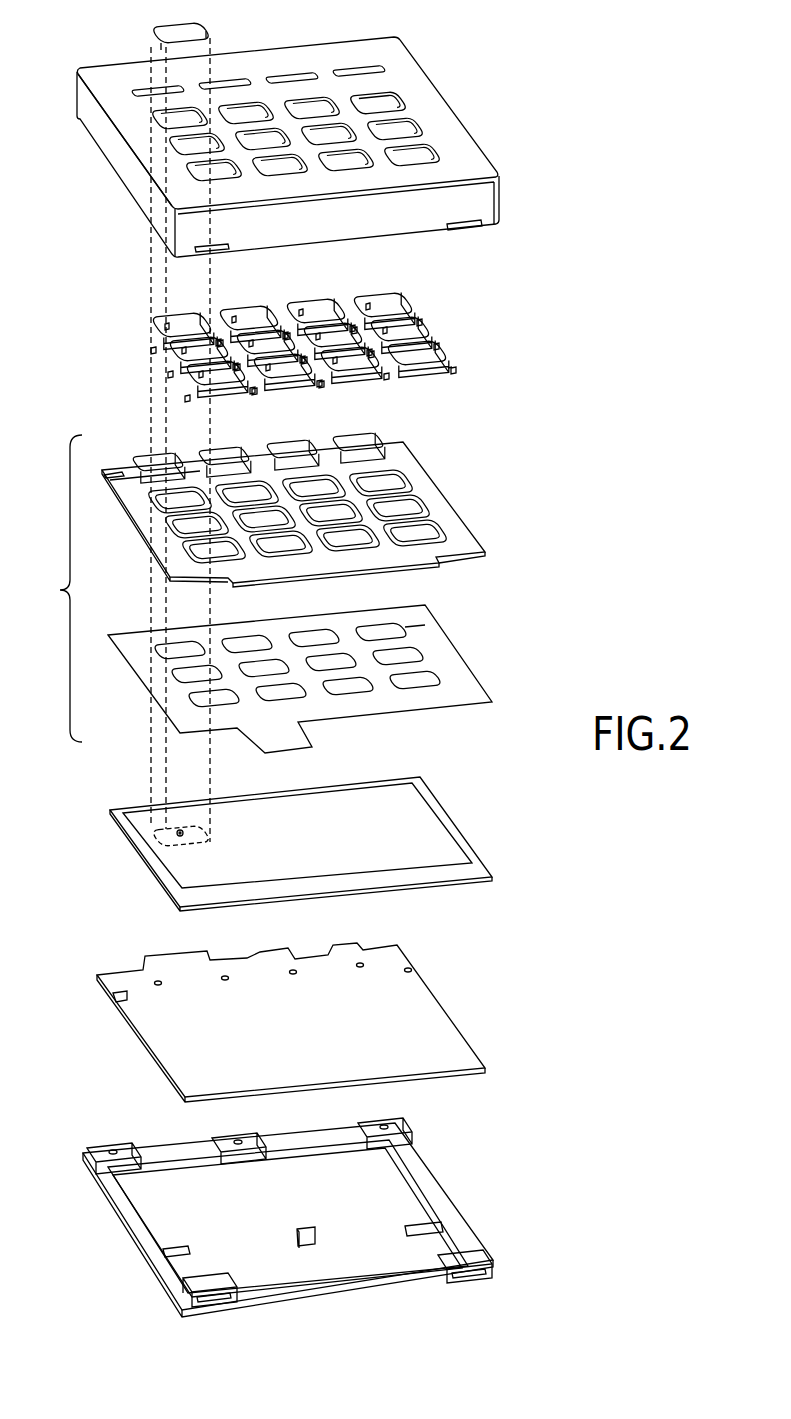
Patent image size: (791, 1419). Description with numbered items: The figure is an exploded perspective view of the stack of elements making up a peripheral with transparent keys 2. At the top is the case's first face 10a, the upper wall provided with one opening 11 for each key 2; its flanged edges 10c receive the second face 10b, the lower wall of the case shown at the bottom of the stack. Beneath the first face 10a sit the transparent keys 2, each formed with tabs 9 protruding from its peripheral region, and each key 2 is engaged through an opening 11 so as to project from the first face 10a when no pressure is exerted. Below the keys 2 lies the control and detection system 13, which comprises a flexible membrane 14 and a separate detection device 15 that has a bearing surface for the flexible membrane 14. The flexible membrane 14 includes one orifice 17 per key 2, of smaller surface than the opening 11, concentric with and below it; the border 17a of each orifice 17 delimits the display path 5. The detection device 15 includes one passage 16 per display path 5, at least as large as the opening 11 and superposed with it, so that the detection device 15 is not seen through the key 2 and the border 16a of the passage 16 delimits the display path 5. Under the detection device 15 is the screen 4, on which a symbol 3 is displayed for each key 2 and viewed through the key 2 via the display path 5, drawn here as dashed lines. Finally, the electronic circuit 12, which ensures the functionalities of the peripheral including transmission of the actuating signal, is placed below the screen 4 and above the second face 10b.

The transparent key 2 is at (410, 327).
The symbol 3 is at (180, 831).
The screen 4 is at (470, 848).
The display path 5 is at (158, 23).
The tab 9 is at (456, 372).
The first face 10a is at (292, 147).
The second face 10b is at (443, 1200).
The flanged edges 10c is at (112, 145).
The opening 11 is at (377, 107).
The electronic circuit 12 is at (442, 1025).
The control and detection system 13 is at (283, 593).
The flexible membrane 14 is at (321, 510).
The detection device 15 is at (317, 667).
The passage 16 is at (383, 630).
The border 16a is at (428, 625).
The orifice 17 is at (397, 510).
The border 17a is at (425, 502).